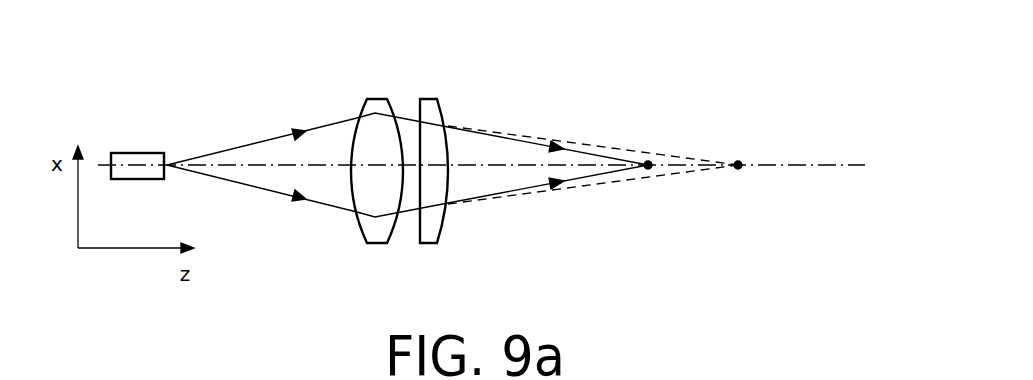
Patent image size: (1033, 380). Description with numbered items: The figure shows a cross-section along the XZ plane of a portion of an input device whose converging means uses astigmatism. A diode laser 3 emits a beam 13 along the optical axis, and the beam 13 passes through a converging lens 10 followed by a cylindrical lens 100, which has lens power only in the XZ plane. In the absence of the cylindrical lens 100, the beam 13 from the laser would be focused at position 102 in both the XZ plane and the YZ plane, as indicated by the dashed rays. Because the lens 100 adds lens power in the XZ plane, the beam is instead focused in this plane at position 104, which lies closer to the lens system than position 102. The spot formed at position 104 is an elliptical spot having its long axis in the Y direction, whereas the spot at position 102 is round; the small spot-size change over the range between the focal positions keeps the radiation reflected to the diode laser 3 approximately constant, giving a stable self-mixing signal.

The diode laser 3 is at (137, 152).
The beam 13 is at (278, 178).
The collimating lens 10 is at (378, 98).
The cylindrical lens 100 is at (430, 98).
The position 104 is at (648, 170).
The position 102 is at (738, 170).